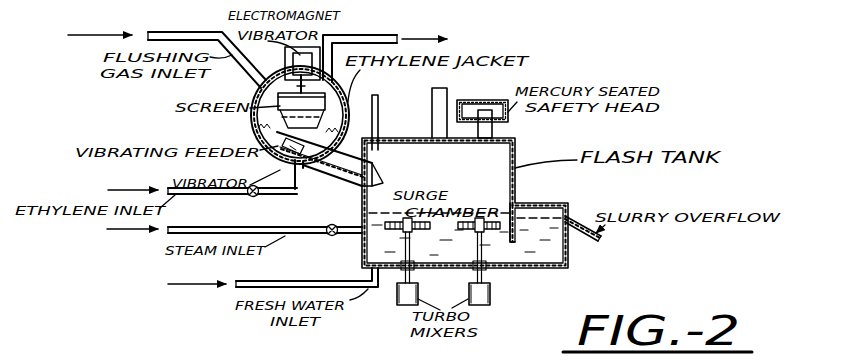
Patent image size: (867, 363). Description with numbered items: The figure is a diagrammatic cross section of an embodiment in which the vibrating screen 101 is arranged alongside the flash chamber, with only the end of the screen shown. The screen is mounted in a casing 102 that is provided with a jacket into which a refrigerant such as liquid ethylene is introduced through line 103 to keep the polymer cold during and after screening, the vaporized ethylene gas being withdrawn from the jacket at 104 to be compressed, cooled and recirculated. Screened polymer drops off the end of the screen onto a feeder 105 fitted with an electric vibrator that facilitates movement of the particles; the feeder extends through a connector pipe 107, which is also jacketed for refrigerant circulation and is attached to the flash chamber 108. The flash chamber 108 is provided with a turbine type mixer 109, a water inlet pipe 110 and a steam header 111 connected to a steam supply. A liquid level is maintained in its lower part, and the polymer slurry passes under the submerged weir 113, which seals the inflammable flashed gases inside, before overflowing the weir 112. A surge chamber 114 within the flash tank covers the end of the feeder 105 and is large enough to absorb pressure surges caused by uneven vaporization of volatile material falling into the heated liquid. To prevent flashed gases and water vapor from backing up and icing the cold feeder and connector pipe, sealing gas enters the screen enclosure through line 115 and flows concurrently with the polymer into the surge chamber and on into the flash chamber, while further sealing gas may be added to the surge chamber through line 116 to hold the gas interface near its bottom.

The vibrating screen 101 is at (252, 127).
The casing 102 is at (377, 79).
The line 103 is at (202, 205).
The jacket outlet 104 is at (328, 36).
The feeder 105 is at (275, 155).
The connector pipe 107 is at (338, 178).
The flash chamber 108 is at (515, 158).
The turbine type mixer 109 is at (472, 230).
The water inlet pipe 110 is at (360, 278).
The steam header 111 is at (312, 236).
The weir 112 is at (579, 236).
The submerged weir 113 is at (520, 215).
The surge chamber 114 is at (386, 178).
The line 115 is at (167, 46).
The line 116 is at (380, 111).